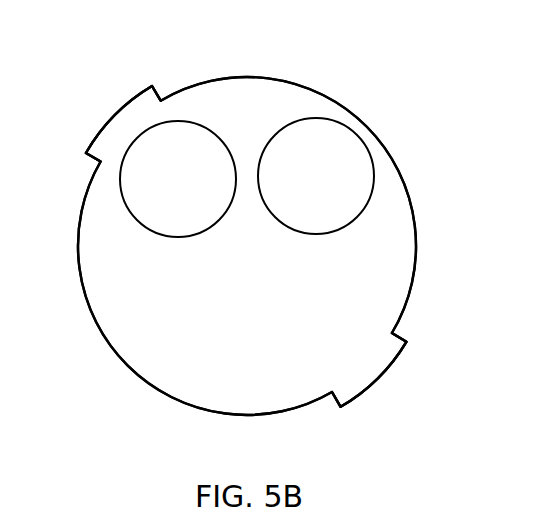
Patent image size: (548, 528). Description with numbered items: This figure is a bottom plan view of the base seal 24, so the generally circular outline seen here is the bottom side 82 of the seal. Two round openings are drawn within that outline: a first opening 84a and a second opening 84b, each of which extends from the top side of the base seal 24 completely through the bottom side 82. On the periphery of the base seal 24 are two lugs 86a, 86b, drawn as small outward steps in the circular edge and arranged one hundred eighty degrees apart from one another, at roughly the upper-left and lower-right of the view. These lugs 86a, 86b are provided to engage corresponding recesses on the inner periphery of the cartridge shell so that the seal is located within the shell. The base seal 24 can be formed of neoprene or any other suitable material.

The base seal 24 is at (340, 104).
The bottom side 82 is at (240, 92).
The first opening 84a is at (170, 238).
The second opening 84b is at (325, 120).
The lug 86a is at (118, 127).
The lug 86b is at (370, 363).